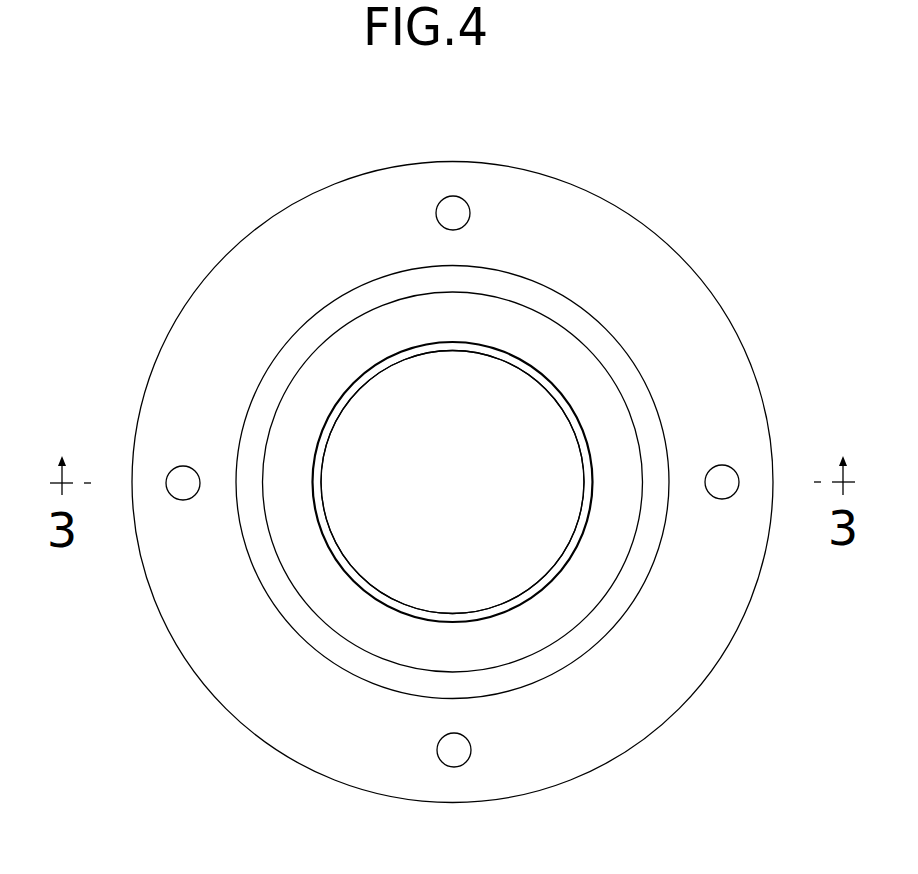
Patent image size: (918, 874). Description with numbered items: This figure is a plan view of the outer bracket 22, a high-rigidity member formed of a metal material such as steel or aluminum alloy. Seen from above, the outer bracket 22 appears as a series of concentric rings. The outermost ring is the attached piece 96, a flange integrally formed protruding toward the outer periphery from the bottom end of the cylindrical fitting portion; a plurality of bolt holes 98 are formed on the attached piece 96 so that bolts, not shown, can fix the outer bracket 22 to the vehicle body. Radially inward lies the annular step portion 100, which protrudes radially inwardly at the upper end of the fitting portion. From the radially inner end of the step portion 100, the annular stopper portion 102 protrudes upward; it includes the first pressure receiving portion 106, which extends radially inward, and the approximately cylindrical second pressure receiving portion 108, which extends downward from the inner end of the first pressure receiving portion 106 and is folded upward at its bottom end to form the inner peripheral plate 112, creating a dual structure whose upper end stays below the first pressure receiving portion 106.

The outer bracket 22 is at (679, 190).
The attached piece 96 is at (223, 637).
The bolt holes 98 is at (440, 202).
The step portion 100 is at (293, 352).
The stopper portion 102 is at (612, 369).
The first pressure receiving portion 106 is at (400, 637).
The second pressure receiving portion 108 is at (369, 391).
The inner peripheral plate 112 is at (558, 567).